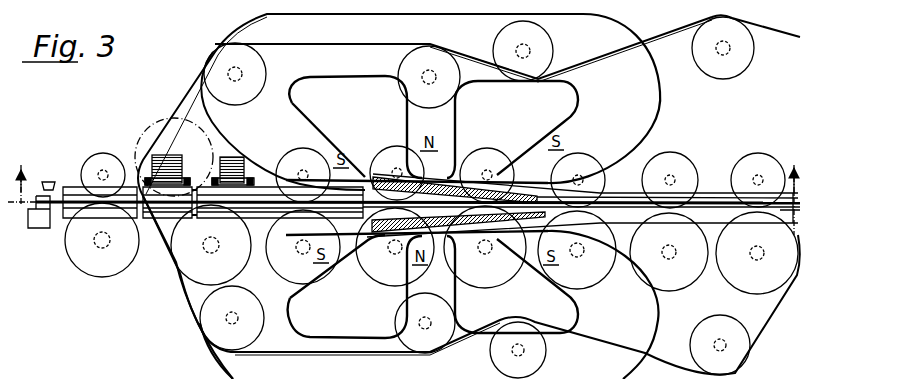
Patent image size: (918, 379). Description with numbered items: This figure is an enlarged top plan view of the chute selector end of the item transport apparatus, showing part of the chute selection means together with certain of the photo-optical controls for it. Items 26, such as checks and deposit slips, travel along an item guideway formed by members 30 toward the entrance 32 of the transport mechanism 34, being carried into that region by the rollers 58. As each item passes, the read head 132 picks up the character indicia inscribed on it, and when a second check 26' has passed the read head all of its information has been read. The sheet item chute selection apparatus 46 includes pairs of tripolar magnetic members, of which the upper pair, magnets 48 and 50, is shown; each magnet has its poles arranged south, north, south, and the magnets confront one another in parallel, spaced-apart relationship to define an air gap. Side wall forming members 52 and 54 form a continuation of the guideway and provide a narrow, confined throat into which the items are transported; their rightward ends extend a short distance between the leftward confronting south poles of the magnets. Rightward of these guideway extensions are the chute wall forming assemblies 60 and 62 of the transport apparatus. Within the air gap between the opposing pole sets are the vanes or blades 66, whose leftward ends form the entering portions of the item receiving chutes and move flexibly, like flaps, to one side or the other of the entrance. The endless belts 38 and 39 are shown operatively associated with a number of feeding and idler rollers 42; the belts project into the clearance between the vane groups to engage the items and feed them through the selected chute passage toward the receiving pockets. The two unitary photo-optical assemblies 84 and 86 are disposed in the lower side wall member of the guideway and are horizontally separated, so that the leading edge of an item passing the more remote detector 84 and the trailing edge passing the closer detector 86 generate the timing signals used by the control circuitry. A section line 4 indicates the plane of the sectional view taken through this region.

The section line 4- 4 is at (402, 188).
The items 26 is at (418, 198).
The second check 26' is at (47, 165).
The item guideway members 30 is at (70, 186).
The entrance 32 is at (363, 187).
The transport mechanism 34 is at (658, 186).
The belt 38 is at (686, 42).
The belt 39 is at (668, 352).
The feeding and idler rollers 42 is at (200, 322).
The sheet item chute selection apparatus 46 is at (208, 50).
The magnet 48 is at (483, 52).
The magnet 50 is at (373, 333).
The side wall forming member 52 is at (207, 184).
The side wall forming member 54 is at (163, 220).
The rollers 58 is at (102, 160).
The chute wall forming assembly 60 is at (726, 200).
The chute wall forming assembly 62 is at (703, 223).
The vanes or blades 66 is at (471, 220).
The photo-optical assembly 84 is at (162, 170).
The photo-optical assembly 86 is at (240, 172).
The read head 132 is at (40, 229).